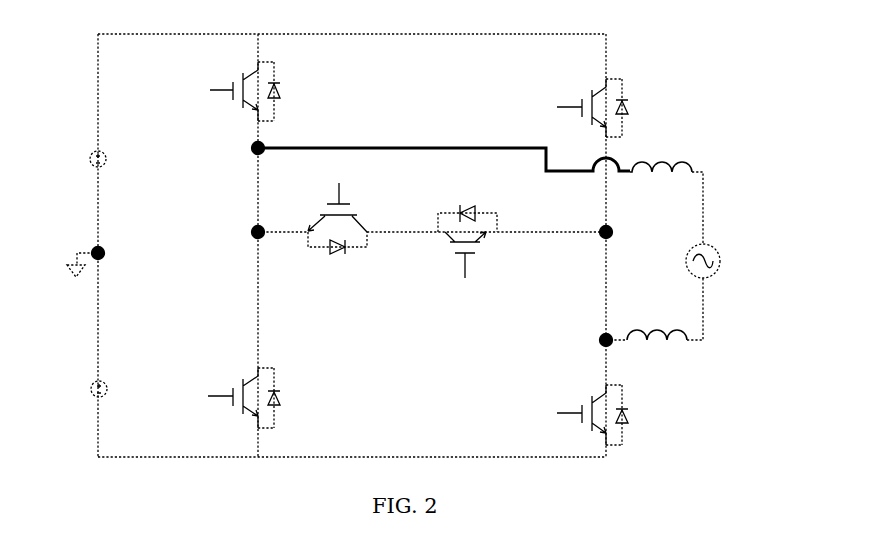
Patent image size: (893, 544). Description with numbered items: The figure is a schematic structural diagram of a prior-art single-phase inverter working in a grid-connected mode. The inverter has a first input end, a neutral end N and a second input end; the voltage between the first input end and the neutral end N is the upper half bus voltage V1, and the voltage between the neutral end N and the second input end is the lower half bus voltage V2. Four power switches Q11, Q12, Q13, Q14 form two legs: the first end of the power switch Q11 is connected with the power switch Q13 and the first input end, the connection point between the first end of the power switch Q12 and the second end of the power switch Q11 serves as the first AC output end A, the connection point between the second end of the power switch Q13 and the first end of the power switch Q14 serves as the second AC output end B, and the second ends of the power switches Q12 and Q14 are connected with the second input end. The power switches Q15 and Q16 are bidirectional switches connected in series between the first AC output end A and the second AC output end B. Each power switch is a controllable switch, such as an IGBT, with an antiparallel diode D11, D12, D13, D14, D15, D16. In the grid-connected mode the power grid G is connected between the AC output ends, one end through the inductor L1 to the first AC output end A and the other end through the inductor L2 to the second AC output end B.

The power switch Q11 is at (238, 91).
The diode D11 is at (288, 91).
The power switch Q12 is at (238, 398).
The diode D12 is at (288, 398).
The power switch Q13 is at (586, 108).
The diode D13 is at (637, 108).
The power switch Q14 is at (586, 415).
The diode D14 is at (636, 415).
The power switch Q15 is at (338, 206).
The diode D15 is at (337, 253).
The power switch Q16 is at (459, 256).
The diode D16 is at (467, 208).
The inductor L1 is at (666, 203).
The inductor L2 is at (652, 312).
The power grid G is at (690, 261).
The upper half bus voltage V1 is at (87, 159).
The lower half bus voltage V2 is at (87, 389).
The neutral end N is at (91, 262).
The first AC output end A is at (247, 238).
The second AC output end B is at (599, 242).